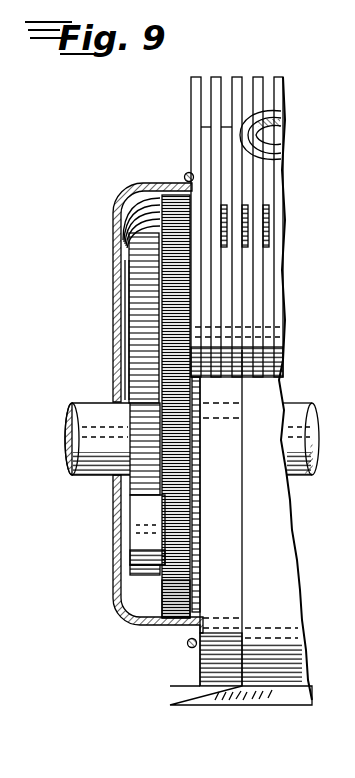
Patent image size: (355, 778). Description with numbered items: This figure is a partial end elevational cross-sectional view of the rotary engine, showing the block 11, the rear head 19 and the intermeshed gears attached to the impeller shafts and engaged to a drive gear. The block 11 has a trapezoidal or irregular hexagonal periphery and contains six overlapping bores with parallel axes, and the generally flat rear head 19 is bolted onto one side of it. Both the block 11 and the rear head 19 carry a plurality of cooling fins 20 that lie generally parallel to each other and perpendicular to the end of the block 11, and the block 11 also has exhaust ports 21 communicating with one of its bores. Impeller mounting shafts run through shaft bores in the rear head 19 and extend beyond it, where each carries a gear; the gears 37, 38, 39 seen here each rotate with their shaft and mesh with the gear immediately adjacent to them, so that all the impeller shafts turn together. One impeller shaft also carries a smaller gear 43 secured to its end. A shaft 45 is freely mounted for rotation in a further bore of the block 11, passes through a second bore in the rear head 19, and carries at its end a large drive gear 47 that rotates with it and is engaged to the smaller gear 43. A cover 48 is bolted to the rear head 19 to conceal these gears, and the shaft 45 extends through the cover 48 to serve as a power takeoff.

The block 11 is at (272, 660).
The rear head 19 is at (218, 658).
The cooling fins 20 is at (257, 77).
The exhaust ports 21 is at (283, 128).
The gear 37 is at (181, 587).
The gear 38 is at (173, 363).
The gear 39 is at (140, 184).
The smaller gear 43 is at (113, 240).
The shaft 45 is at (305, 415).
The large drive gear 47 is at (145, 474).
The cover 48 is at (117, 511).